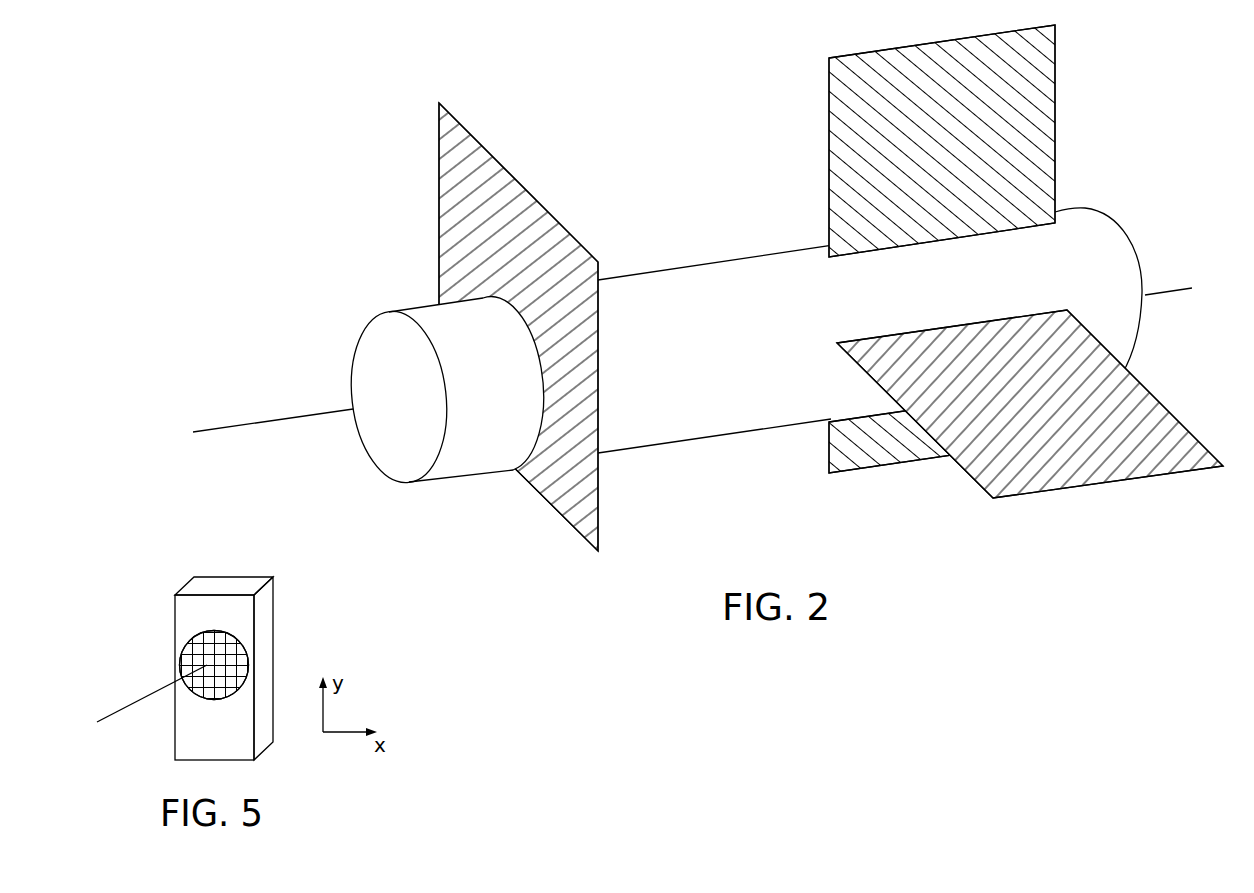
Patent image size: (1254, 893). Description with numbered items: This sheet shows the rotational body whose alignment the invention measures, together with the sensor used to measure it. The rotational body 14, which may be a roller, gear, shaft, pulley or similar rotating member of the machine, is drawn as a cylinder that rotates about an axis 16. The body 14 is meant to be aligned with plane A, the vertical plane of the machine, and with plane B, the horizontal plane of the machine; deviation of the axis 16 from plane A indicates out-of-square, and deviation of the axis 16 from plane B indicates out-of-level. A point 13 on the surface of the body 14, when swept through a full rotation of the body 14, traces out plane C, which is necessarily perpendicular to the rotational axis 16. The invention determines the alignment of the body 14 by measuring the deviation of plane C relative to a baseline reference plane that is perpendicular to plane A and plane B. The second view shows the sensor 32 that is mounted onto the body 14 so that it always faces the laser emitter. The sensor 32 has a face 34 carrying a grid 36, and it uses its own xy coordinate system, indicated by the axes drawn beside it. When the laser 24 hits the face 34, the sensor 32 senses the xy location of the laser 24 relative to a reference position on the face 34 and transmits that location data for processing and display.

In FIG. 2, the point 13 is at (539, 380).
In FIG. 2, the rotational body 14 is at (692, 275).
In FIG. 2, the axis 16 is at (268, 420).
In FIG. 2, the plane A is at (1048, 93).
In FIG. 2, the plane B is at (1100, 483).
In FIG. 2, the plane C is at (440, 158).
In FIG. 5, the sensor 32 is at (138, 581).
In FIG. 5, the face 34 is at (215, 640).
In FIG. 5, the grid 36 is at (236, 667).
In FIG. 5, the laser 24 is at (108, 714).